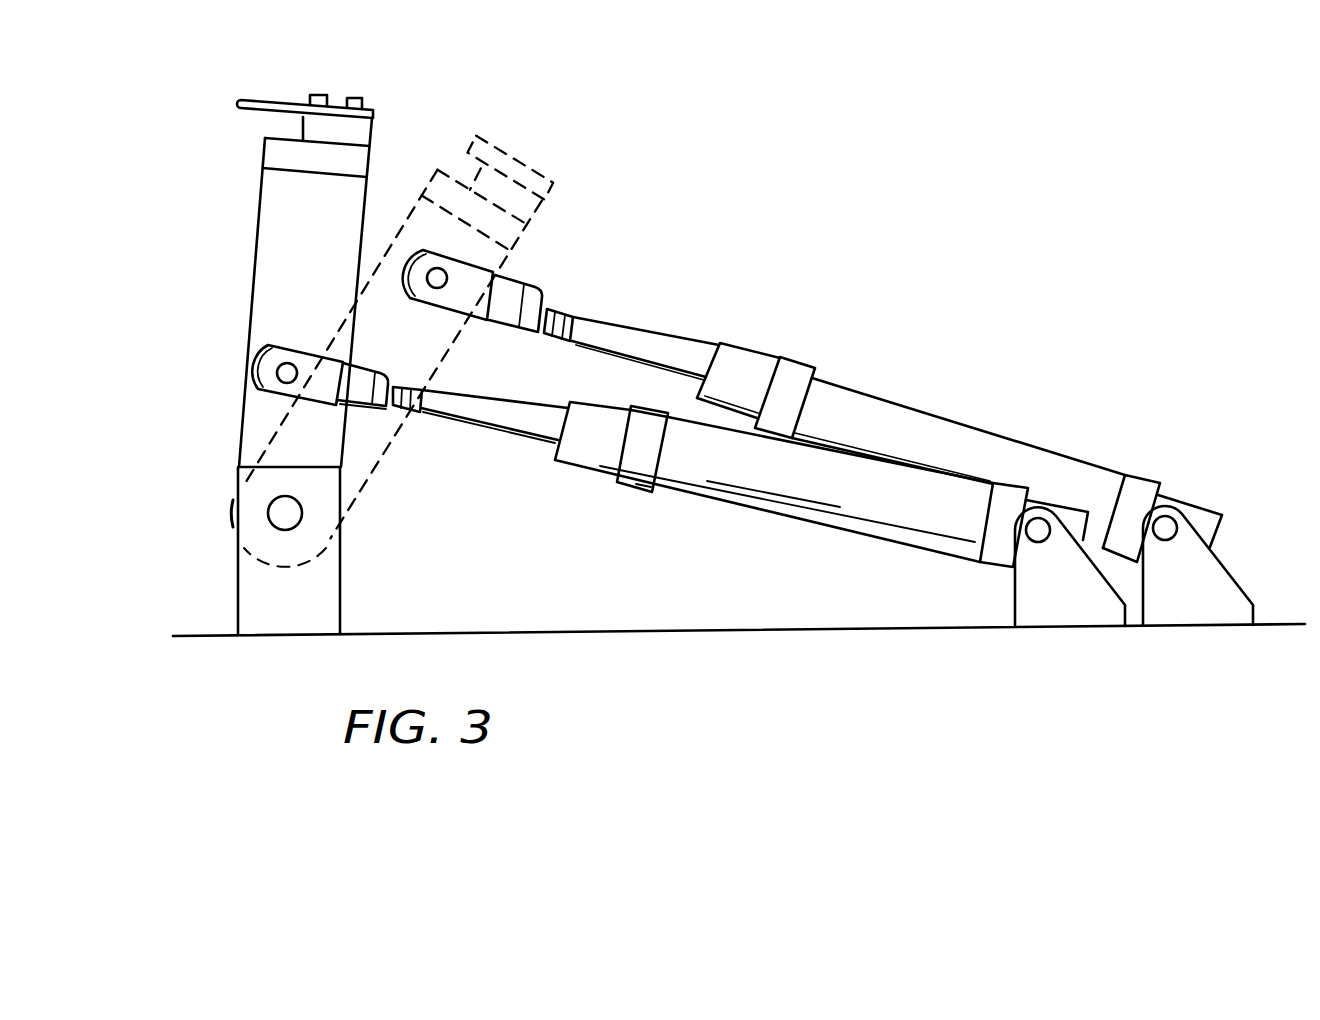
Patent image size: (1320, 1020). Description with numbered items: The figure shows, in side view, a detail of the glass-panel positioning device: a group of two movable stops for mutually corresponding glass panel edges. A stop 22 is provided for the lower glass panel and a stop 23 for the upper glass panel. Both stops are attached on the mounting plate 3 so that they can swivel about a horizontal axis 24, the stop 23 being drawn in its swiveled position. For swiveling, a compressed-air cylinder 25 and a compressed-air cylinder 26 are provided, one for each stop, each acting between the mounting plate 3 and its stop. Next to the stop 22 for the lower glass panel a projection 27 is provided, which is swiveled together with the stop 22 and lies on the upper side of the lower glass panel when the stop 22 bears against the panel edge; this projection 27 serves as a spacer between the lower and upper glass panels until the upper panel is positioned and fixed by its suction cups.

The mounting plate 3 is at (563, 633).
The stop 22 is at (265, 146).
The stop 23 is at (512, 150).
The horizontal axis 24 is at (287, 513).
The compressed-air cylinder 25 is at (892, 412).
The compressed-air cylinder 26 is at (752, 475).
The projection 27 is at (290, 101).